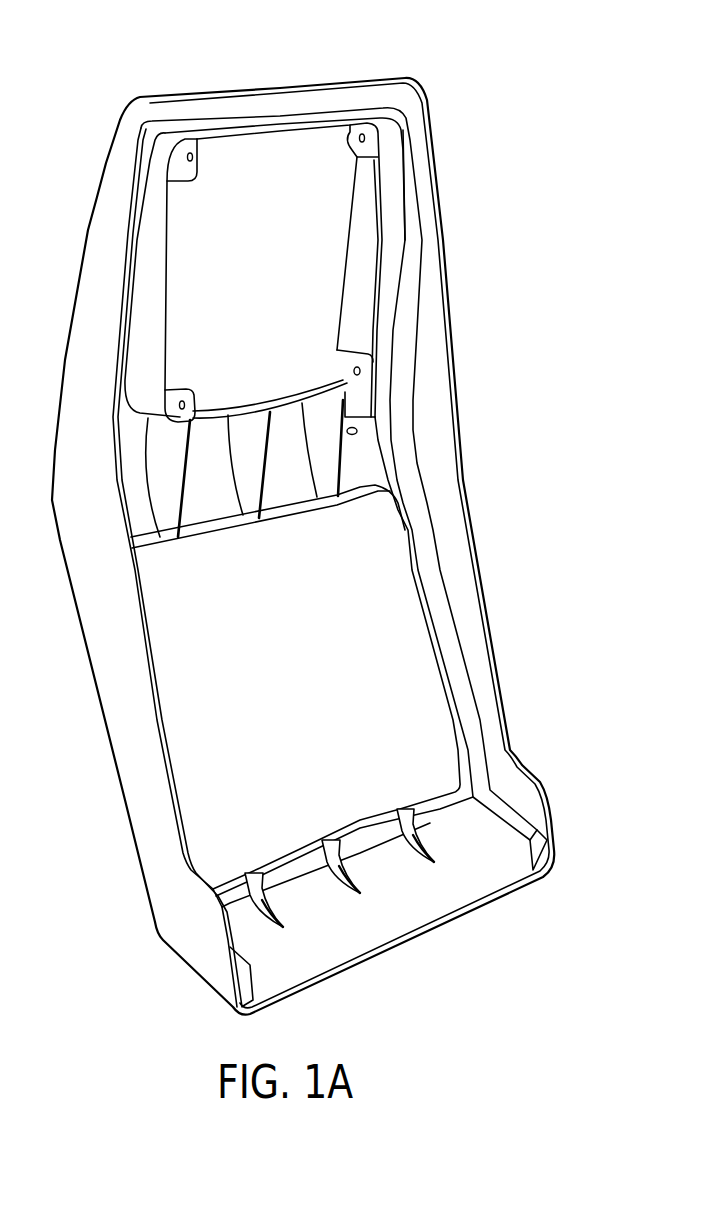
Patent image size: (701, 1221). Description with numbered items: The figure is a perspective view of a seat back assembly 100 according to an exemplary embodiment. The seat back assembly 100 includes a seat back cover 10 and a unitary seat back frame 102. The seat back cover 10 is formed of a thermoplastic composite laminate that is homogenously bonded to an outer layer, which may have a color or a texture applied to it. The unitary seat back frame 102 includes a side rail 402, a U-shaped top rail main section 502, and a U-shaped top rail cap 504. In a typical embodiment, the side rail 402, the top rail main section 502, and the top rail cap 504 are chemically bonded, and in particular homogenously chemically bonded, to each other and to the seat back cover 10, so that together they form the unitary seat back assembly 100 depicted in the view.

The seat back assembly 100 is at (508, 82).
The seat back cover 10 is at (483, 587).
The unitary seat back frame 102 is at (400, 447).
The side rail 402 is at (413, 298).
The top rail main section 502 is at (308, 98).
The top rail cap 504 is at (417, 180).